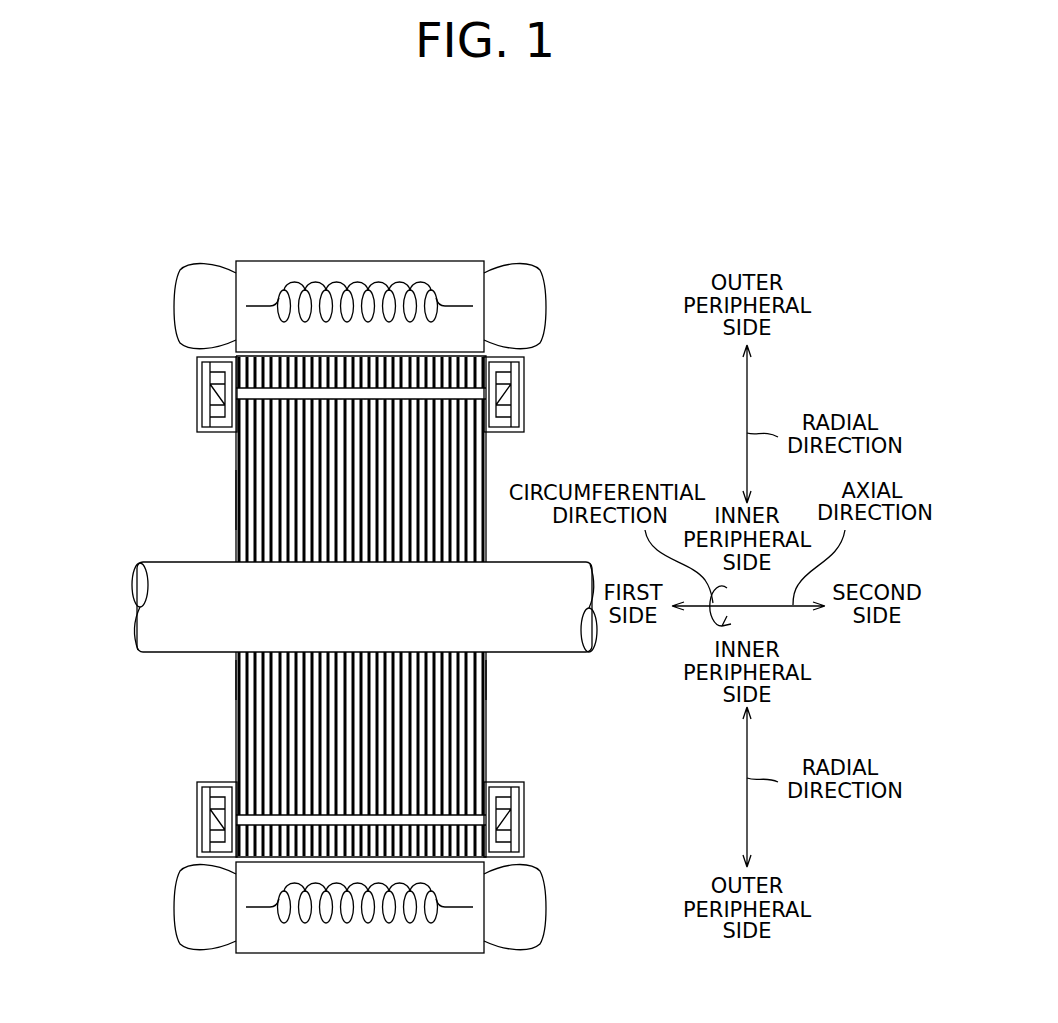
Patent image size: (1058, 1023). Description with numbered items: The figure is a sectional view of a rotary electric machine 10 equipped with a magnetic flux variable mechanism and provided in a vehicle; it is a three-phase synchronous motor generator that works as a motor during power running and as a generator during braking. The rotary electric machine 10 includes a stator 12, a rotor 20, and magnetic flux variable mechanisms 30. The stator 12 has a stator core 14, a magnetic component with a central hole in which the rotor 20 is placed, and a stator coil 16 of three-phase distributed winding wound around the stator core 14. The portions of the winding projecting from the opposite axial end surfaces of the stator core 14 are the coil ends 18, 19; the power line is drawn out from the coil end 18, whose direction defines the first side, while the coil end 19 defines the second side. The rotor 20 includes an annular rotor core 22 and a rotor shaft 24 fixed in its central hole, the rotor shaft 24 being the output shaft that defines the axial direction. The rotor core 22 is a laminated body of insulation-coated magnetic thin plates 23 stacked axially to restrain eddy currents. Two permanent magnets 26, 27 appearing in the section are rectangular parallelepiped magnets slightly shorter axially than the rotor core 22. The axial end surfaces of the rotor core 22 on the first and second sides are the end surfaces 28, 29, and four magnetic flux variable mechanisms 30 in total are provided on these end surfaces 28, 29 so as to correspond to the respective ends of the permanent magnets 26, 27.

The rotary electric machine 10 is at (87, 285).
The stator 12 is at (495, 210).
The stator core 14 is at (393, 261).
The stator coil 16 is at (337, 290).
The coil end 18 is at (205, 278).
The coil end 19 is at (513, 278).
The rotor 20 is at (78, 475).
The rotor core 22 is at (237, 533).
The magnetic thin plates 23 is at (237, 498).
The rotor shaft 24 is at (150, 622).
The permanent magnet 26 is at (291, 395).
The permanent magnet 27 is at (293, 818).
The end surface 28 is at (226, 684).
The end surface 29 is at (496, 684).
The magnetic flux variable mechanism 30 is at (197, 395).